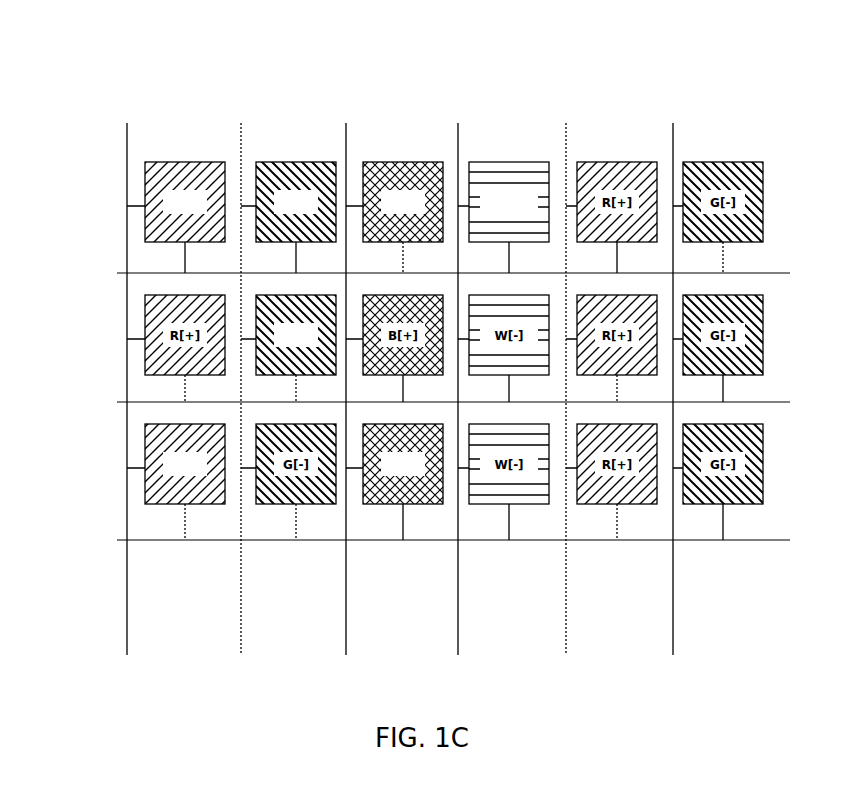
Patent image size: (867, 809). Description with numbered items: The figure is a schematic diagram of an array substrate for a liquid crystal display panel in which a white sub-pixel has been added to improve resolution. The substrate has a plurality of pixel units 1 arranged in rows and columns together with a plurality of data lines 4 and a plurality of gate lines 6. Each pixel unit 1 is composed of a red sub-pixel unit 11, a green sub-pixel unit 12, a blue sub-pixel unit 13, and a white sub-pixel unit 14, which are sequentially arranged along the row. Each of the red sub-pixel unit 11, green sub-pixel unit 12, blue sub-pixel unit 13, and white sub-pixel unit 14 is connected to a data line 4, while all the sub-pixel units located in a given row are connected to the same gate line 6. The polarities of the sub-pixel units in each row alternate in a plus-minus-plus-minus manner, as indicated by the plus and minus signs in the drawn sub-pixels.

The pixel unit 1 is at (403, 162).
The data line 4 is at (127, 162).
The gate line 6 is at (145, 274).
The red sub-pixel unit 11 is at (145, 475).
The green sub-pixel unit 12 is at (256, 375).
The blue sub-pixel unit 13 is at (363, 505).
The white sub-pixel unit 14 is at (495, 168).